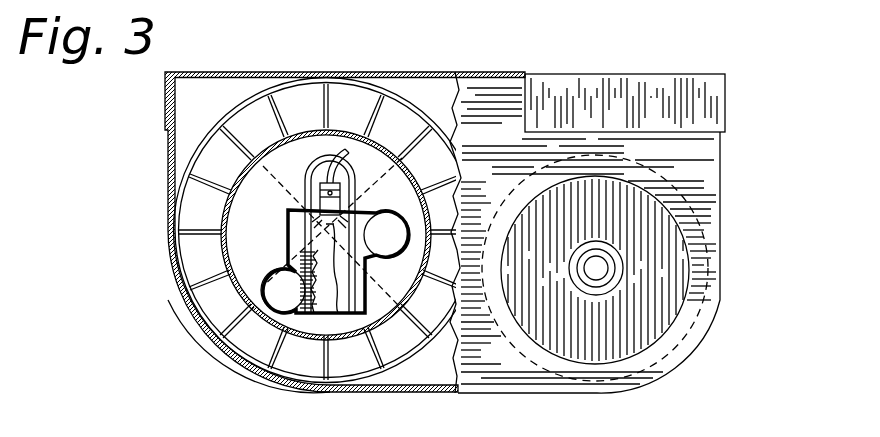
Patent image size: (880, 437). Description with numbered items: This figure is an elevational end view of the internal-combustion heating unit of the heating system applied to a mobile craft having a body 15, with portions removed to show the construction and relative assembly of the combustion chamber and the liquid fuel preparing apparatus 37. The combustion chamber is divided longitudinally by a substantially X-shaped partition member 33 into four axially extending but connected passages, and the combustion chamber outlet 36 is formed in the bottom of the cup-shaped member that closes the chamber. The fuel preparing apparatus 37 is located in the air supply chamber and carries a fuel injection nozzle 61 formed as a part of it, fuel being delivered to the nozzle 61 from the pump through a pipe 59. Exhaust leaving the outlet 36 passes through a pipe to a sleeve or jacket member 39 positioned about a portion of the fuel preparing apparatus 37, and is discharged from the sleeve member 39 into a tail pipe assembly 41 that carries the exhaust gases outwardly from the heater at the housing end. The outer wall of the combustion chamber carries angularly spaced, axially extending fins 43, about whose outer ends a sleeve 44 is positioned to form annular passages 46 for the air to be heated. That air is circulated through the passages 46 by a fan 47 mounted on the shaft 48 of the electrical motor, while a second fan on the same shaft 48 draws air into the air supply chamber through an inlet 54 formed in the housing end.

The body 15 is at (612, 72).
The partition member 33 is at (441, 172).
The outlet 36 is at (410, 230).
The liquid fuel preparing apparatus 37 is at (347, 314).
The sleeve or jacket member 39 is at (287, 229).
The tail pipe assembly 41 is at (270, 272).
The fins 43 is at (289, 372).
The sleeve 44 is at (243, 360).
The annular passages 46 is at (190, 262).
The fan 47 is at (704, 308).
The shaft 48 is at (598, 262).
The inlet 54 is at (645, 220).
The pipe 59 is at (342, 176).
The fuel injection nozzle 61 is at (320, 192).